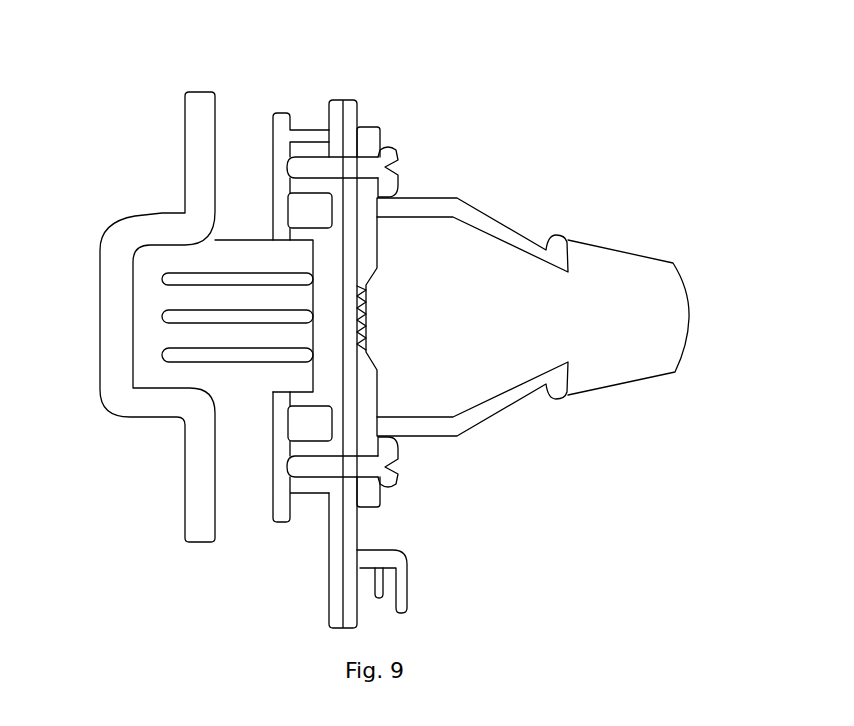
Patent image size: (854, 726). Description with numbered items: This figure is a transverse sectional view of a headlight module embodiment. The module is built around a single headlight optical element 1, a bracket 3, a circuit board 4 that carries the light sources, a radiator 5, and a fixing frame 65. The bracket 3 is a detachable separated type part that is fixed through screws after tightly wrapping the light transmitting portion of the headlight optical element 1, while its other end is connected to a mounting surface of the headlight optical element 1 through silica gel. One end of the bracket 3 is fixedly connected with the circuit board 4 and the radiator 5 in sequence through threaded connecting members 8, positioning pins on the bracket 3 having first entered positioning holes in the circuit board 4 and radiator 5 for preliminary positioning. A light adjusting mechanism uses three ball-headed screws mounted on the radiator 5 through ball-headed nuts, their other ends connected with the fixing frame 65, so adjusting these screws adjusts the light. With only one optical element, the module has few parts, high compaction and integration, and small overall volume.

The headlight optical element 1 is at (671, 286).
The bracket 3 is at (507, 216).
The circuit board 4 is at (352, 122).
The radiator 5 is at (272, 530).
The threaded connecting members 8 is at (388, 157).
The fixing frame 65 is at (176, 522).